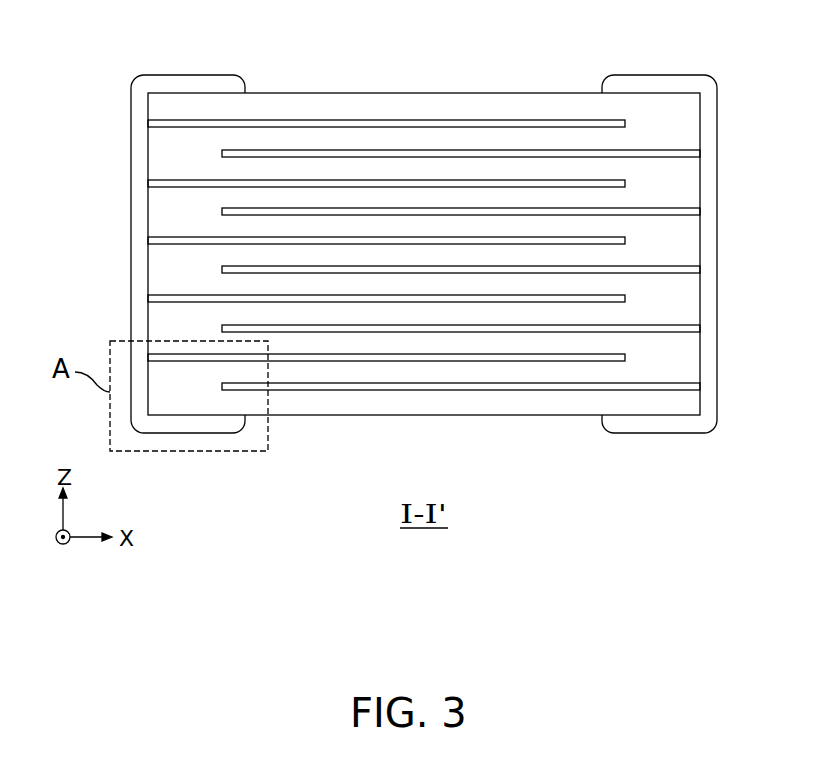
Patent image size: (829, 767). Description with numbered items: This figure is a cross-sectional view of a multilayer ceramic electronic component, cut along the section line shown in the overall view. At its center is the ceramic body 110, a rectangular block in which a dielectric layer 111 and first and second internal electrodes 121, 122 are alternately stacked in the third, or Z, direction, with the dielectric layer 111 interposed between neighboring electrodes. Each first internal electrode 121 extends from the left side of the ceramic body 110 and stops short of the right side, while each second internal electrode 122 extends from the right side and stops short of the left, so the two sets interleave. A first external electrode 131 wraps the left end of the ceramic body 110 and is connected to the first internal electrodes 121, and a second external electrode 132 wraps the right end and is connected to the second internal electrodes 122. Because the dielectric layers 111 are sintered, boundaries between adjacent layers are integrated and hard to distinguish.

The ceramic body 110 is at (405, 93).
The dielectric layer 111 is at (505, 340).
The first internal electrode 121 is at (353, 328).
The second internal electrode 122 is at (402, 355).
The first external electrode 131 is at (191, 75).
The second external electrode 132 is at (661, 75).